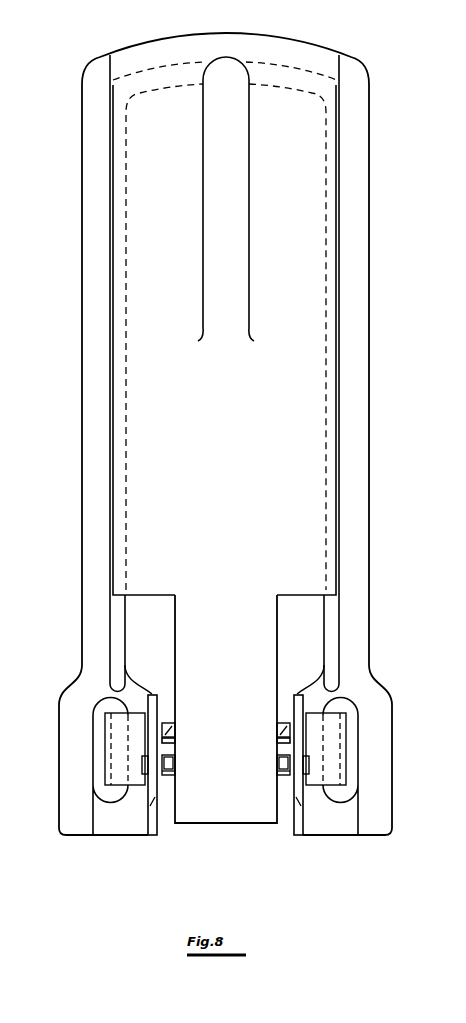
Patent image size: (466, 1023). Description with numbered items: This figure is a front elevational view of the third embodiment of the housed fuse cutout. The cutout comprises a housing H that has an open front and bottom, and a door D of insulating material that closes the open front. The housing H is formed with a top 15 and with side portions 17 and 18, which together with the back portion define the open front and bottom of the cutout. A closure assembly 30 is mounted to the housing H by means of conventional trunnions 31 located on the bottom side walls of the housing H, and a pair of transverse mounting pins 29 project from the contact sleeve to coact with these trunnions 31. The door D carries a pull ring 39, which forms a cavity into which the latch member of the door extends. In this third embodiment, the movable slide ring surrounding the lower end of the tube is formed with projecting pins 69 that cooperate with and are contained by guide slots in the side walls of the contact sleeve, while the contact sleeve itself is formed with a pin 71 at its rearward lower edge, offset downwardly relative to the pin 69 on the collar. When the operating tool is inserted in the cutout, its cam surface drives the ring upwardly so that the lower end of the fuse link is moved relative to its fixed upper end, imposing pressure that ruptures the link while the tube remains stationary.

The top 15 is at (108, 56).
The side portion 17 is at (83, 573).
The side portion 18 is at (369, 565).
The transverse mounting pin 29 is at (141, 763).
The closure assembly 30 is at (238, 665).
The trunnion 31 is at (152, 808).
The pull ring 39 is at (237, 230).
The projecting pin 69 is at (281, 732).
The pin 71 is at (280, 760).
The housing H is at (70, 303).
The door D is at (102, 349).